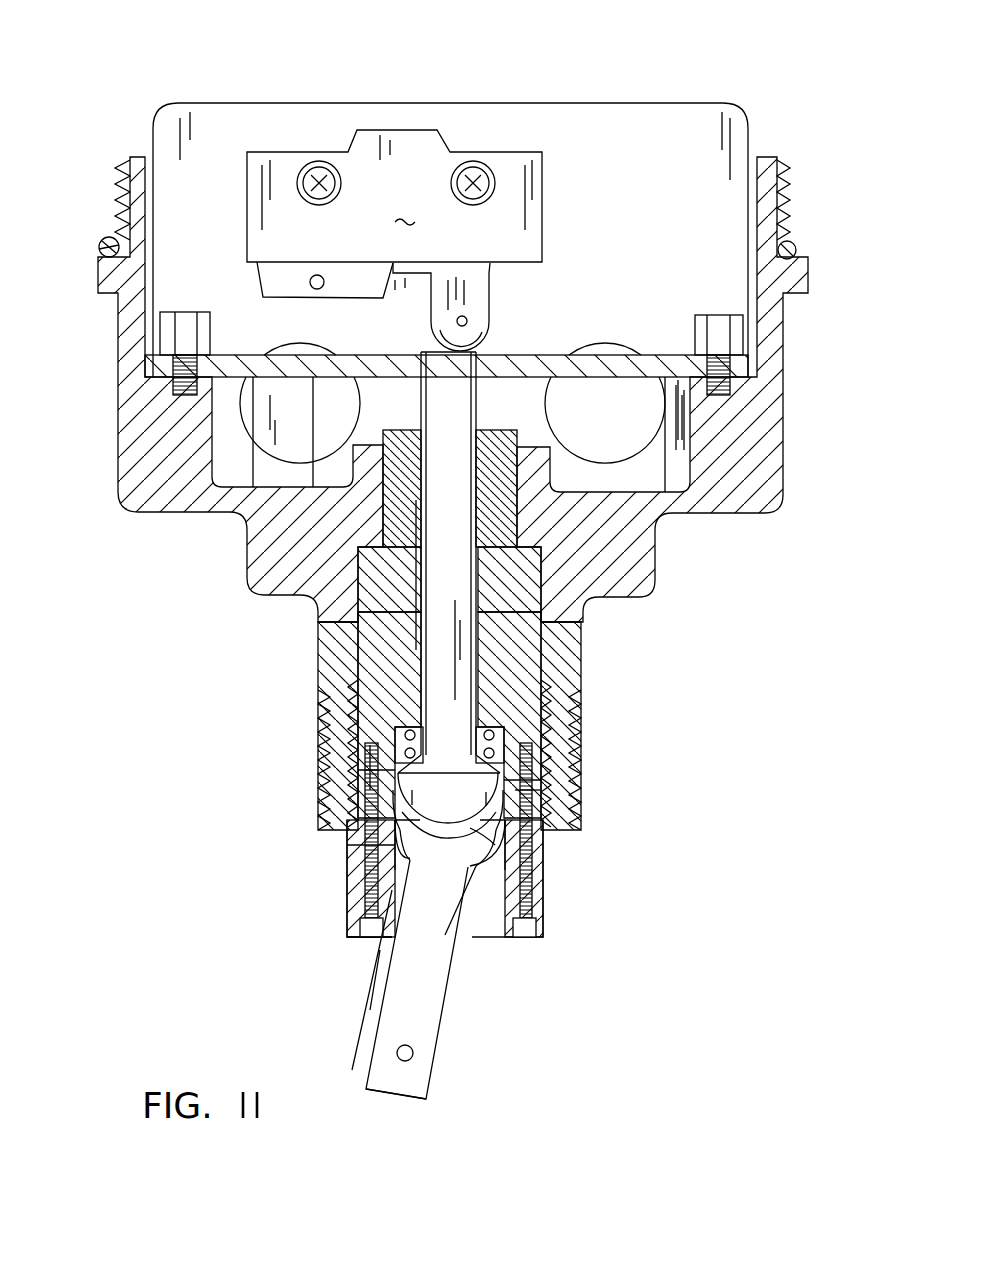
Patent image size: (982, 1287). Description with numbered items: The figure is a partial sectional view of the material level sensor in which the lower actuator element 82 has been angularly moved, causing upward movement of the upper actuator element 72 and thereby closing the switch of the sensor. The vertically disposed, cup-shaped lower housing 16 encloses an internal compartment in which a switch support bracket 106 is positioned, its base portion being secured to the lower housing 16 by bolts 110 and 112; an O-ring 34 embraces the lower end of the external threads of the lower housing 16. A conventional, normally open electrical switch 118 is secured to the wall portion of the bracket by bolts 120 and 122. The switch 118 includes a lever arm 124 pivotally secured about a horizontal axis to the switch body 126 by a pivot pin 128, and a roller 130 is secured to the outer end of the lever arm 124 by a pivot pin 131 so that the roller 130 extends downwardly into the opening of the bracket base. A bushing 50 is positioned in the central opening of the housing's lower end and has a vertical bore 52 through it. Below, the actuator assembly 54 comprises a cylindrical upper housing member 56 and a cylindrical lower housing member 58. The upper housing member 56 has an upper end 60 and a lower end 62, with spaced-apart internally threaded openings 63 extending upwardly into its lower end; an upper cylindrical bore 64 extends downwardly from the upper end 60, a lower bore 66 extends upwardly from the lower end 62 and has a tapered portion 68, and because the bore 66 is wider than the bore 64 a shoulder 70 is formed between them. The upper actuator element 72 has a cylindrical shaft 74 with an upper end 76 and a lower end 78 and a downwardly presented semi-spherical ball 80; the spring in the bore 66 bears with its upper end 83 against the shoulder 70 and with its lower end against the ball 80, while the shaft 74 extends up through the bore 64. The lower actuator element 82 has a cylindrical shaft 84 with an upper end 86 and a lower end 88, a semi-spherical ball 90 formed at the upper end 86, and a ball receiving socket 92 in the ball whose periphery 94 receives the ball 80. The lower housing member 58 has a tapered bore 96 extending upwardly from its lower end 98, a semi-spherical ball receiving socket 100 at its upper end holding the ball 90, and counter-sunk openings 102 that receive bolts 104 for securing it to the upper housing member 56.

The lower housing 16 is at (178, 517).
The O-ring 34 is at (106, 237).
The bushing 50 is at (506, 412).
The bore 52 is at (433, 428).
The actuator assembly 54 is at (526, 660).
The upper housing member 56 is at (518, 626).
The lower housing member 58 is at (541, 885).
The upper end 60 is at (576, 513).
The lower end 62 is at (548, 833).
The internally threaded openings 63 is at (372, 782).
The upper cylindrical bore 64 is at (548, 682).
The lower bore 66 is at (548, 735).
The tapered portion 68 is at (548, 790).
The shoulder 70 is at (493, 728).
The upper actuator element 72 is at (428, 626).
The cylindrical shaft 74 is at (462, 568).
The upper end 76 is at (428, 350).
The lower end 78 is at (403, 745).
The semi-spherical ball 80 is at (360, 789).
The lower actuator element 82 is at (364, 988).
The upper end of spring 83 is at (356, 700).
The cylindrical shaft 84 is at (428, 1035).
The upper end 86 is at (490, 846).
The lower end 88 is at (408, 1098).
The semi-spherical ball 90 is at (503, 852).
The ball receiving socket 92 is at (396, 862).
The periphery of socket 94 is at (546, 805).
The tapered bore 96 is at (468, 928).
The lower end 98 is at (380, 932).
The semi-spherical ball receiving socket 100 is at (497, 848).
The counter-sunk openings 102 is at (352, 915).
The bolts 104 is at (538, 940).
The switch support bracket 106 is at (368, 842).
The bolt 110 is at (182, 322).
The bolt 112 is at (733, 333).
The electrical switch 118 is at (526, 146).
The bolt 120 is at (316, 160).
The bolt 122 is at (472, 160).
The lever arm 124 is at (492, 282).
The switch body 126 is at (406, 206).
The pivot pin 128 is at (312, 288).
The roller 130 is at (486, 345).
The pivot pin 131 is at (468, 318).